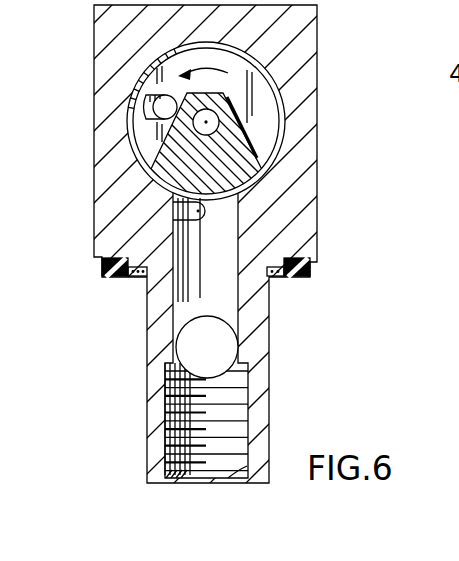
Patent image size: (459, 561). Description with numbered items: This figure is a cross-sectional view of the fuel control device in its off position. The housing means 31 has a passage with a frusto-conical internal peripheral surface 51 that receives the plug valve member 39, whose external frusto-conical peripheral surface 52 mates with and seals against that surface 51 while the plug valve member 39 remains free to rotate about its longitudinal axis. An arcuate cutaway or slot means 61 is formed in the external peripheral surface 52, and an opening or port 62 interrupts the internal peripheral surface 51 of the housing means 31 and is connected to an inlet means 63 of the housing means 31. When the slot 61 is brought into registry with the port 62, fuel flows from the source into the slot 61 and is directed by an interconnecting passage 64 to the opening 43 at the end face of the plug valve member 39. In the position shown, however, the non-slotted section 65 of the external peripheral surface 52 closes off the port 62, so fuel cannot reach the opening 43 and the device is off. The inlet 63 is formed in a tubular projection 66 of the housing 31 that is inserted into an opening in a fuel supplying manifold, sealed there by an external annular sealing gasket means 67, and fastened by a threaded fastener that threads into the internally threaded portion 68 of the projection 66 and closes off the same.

The housing means 31 is at (307, 32).
The plug valve member 39 is at (241, 171).
The opening 43 is at (130, 108).
The frusto-conical internal peripheral surface 51 is at (145, 143).
The external frusto-conical peripheral surface 52 is at (148, 190).
The arcuate cutaway or slot means 61 is at (268, 124).
The opening (port) 62 is at (241, 200).
The inlet means 63 is at (173, 300).
The interconnecting passage 64 is at (150, 101).
The non-slotted section 65 is at (201, 218).
The tubular projection 66 is at (147, 421).
The external annular sealing gasket means 67 is at (292, 284).
The internally threaded portion 68 is at (247, 466).